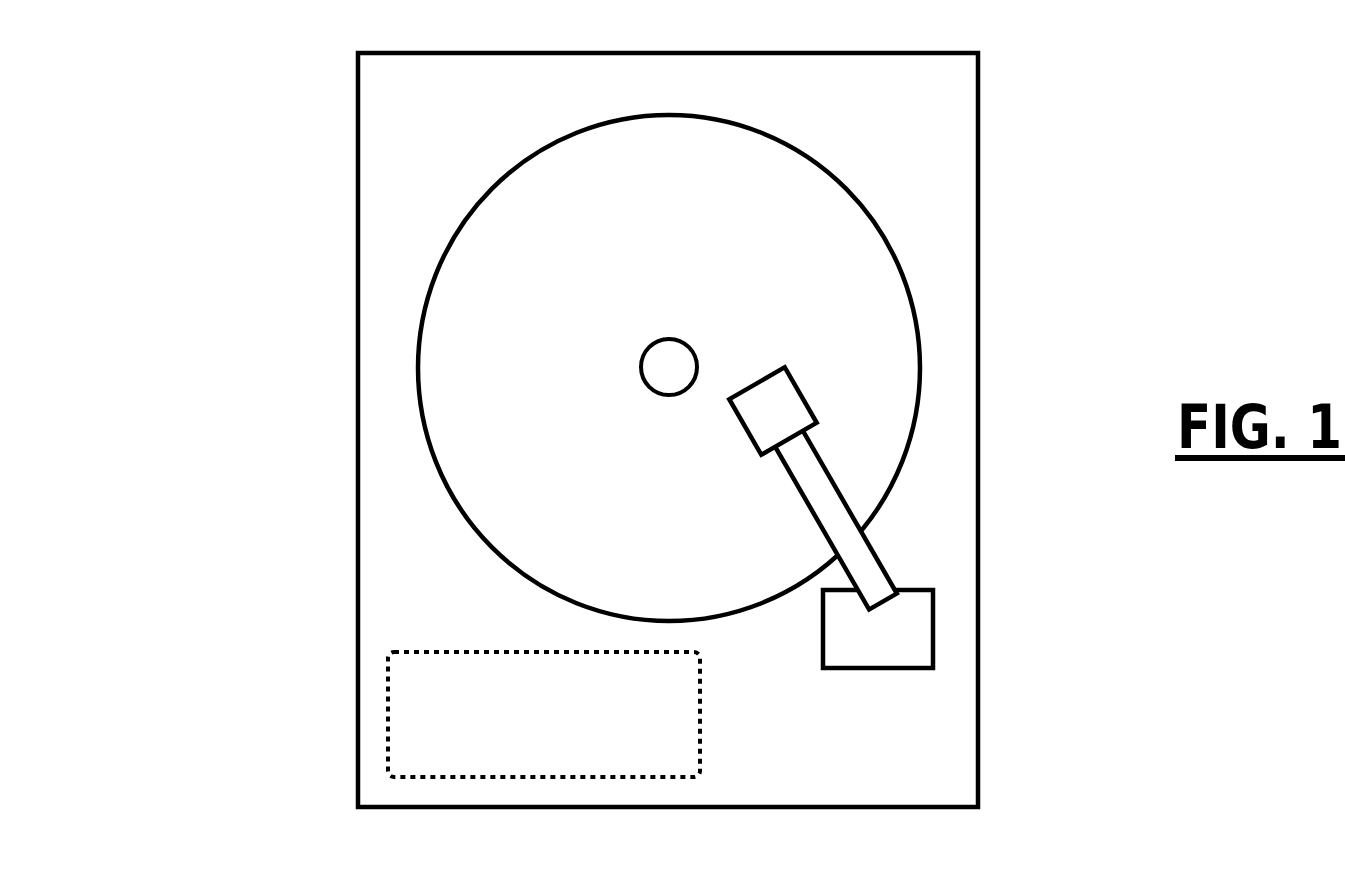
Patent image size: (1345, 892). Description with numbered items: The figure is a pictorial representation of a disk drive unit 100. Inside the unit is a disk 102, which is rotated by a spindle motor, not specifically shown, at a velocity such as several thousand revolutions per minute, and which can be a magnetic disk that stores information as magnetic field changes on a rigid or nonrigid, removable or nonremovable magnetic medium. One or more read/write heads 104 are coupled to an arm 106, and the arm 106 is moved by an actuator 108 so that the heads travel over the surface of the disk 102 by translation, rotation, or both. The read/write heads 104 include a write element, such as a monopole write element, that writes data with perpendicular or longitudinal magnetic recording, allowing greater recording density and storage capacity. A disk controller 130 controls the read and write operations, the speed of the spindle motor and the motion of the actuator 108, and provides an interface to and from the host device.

The disk drive unit 100 is at (282, 464).
The disk 102 is at (512, 173).
The read/write heads 104 is at (842, 407).
The arm 106 is at (845, 502).
The actuator 108 is at (823, 646).
The disk controller 130 is at (544, 714).